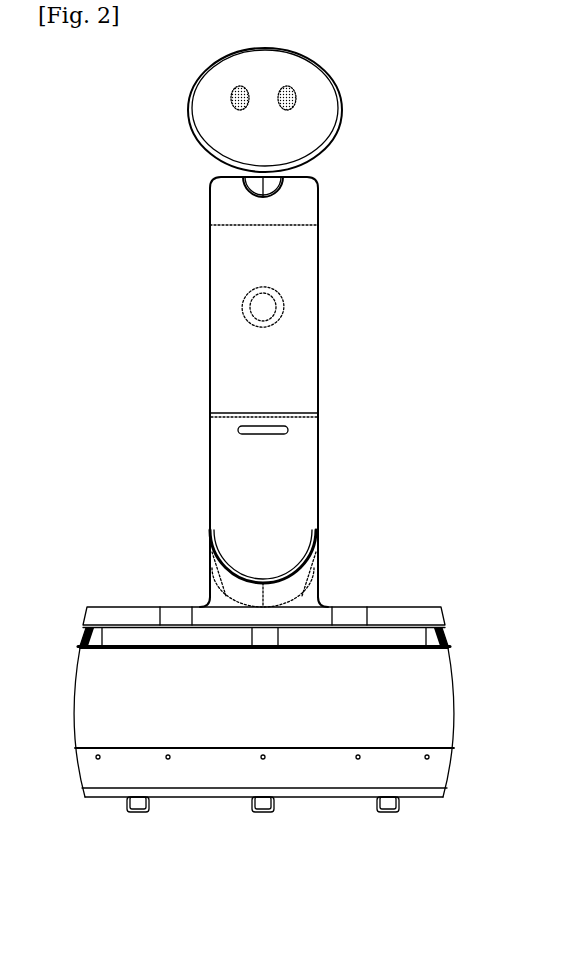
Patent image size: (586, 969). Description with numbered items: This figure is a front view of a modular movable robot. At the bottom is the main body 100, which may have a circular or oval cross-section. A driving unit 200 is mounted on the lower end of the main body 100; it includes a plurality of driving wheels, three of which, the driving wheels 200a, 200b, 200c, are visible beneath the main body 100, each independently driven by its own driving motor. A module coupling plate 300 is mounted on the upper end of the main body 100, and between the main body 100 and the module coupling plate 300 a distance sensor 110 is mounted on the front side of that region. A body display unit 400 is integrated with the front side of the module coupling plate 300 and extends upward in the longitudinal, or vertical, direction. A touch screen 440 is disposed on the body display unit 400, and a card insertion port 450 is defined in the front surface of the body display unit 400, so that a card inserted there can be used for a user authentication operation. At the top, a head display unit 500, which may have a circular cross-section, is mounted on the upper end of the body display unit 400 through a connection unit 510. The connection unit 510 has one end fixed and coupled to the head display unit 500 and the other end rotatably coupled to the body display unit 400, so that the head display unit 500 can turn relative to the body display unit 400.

The main body 100 is at (440, 700).
The distance sensor 110 is at (267, 637).
The driving unit 200 is at (265, 863).
The driving wheel 200a is at (263, 806).
The driving wheel 200b is at (138, 806).
The driving wheel 200c is at (391, 843).
The module coupling plate 300 is at (420, 613).
The body display unit 400 is at (319, 370).
The touch screen 440 is at (228, 268).
The card insertion port 450 is at (289, 430).
The head display unit 500 is at (318, 90).
The connection unit 510 is at (240, 183).